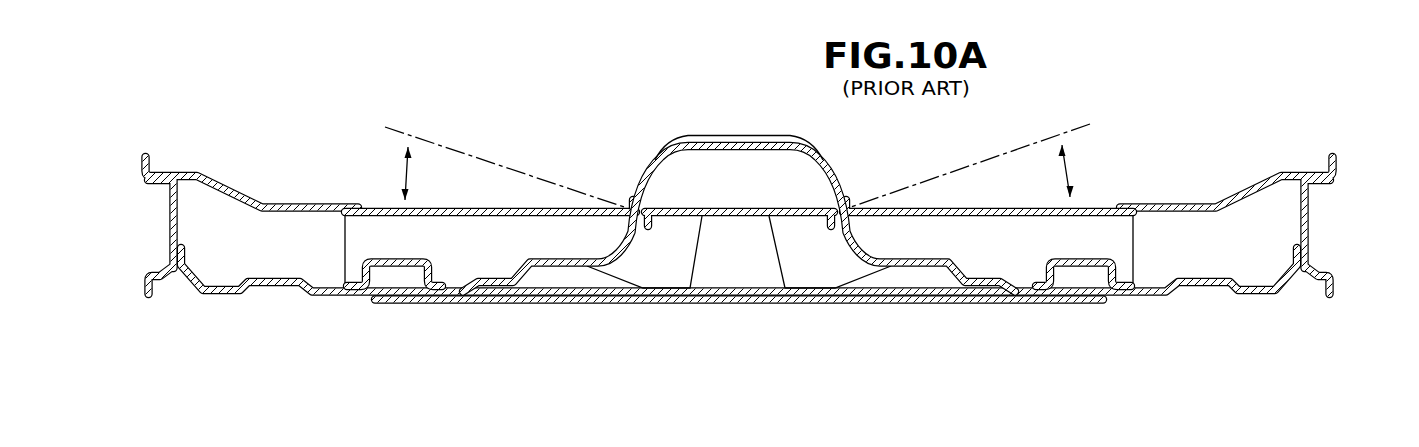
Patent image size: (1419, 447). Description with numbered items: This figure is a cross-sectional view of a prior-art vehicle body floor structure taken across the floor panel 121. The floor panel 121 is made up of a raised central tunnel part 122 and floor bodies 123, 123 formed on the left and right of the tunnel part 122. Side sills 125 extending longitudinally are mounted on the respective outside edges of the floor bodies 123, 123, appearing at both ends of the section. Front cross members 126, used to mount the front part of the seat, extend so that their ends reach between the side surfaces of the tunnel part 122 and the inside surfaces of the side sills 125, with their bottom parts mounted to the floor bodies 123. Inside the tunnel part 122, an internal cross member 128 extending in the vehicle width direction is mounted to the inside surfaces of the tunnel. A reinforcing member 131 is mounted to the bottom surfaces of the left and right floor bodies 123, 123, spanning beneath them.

The floor panel 121 is at (320, 296).
The tunnel part 122 is at (725, 142).
The floor bodies 123 is at (362, 290).
The side sills 125 is at (169, 223).
The front cross members 126 is at (372, 206).
The internal cross member 128 is at (728, 217).
The reinforcing member 131 is at (555, 302).